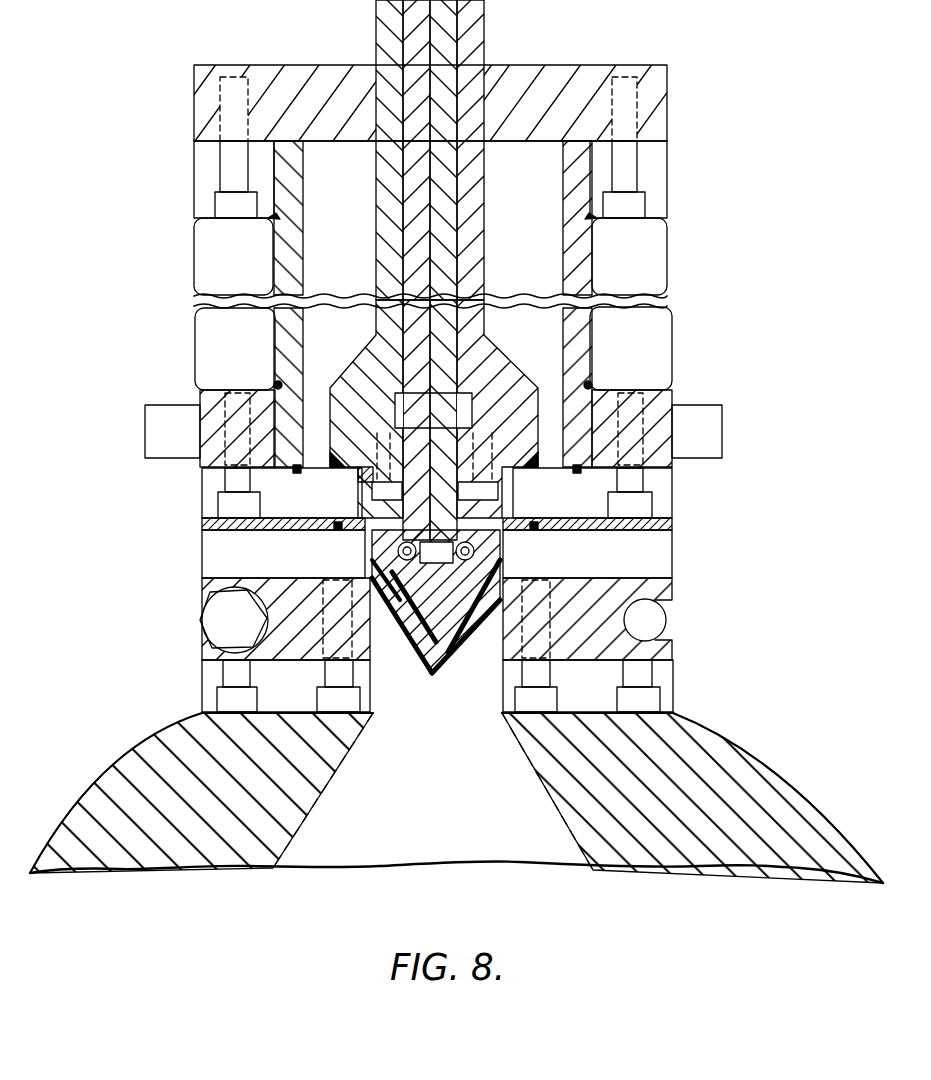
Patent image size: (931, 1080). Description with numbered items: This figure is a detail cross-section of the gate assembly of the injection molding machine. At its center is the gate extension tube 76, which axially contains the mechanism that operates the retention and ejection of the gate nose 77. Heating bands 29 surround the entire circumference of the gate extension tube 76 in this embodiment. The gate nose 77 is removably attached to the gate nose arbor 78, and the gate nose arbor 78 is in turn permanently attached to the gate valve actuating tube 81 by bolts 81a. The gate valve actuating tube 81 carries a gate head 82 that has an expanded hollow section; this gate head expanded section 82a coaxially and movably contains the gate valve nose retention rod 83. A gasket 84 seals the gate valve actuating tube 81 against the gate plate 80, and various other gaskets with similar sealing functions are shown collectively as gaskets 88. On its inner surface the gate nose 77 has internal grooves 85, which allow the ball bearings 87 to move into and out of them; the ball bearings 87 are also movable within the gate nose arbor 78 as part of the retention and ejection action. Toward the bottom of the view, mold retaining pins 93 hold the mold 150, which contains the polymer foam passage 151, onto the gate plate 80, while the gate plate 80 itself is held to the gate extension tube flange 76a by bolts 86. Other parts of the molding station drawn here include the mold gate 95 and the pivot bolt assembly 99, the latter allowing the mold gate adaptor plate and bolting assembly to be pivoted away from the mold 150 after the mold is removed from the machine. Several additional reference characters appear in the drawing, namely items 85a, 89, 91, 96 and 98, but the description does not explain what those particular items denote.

The heating bands 29 is at (618, 273).
The gate extension tube 76 is at (580, 256).
The gate extension tube flange 76a is at (655, 95).
The gate nose 77 is at (442, 645).
The gate nose arbor 78 is at (458, 640).
The gate plate 80 is at (198, 510).
The gate valve actuating tube 81 is at (390, 258).
The bolts 81a is at (377, 482).
The gate head 82 is at (498, 375).
The gate head expanded section 82a is at (463, 408).
The gate valve nose retention rod 83 is at (412, 219).
The gasket 84 is at (515, 455).
The internal grooves 85 is at (480, 550).
The O-ring seat 85a is at (490, 560).
The bolts 86 is at (230, 502).
The ball bearings 87 is at (267, 670).
The gaskets 88 is at (297, 474).
The plate 89 is at (347, 128).
The upper block 91 is at (657, 170).
The mold retaining pins 93 is at (158, 440).
The mold gate 95 is at (592, 620).
The bolt 96 is at (253, 410).
The bottom block 98 is at (647, 676).
The pivot bolt assembly 99 is at (200, 608).
The mold 150 is at (768, 787).
The polymer foam passage 151 is at (437, 842).